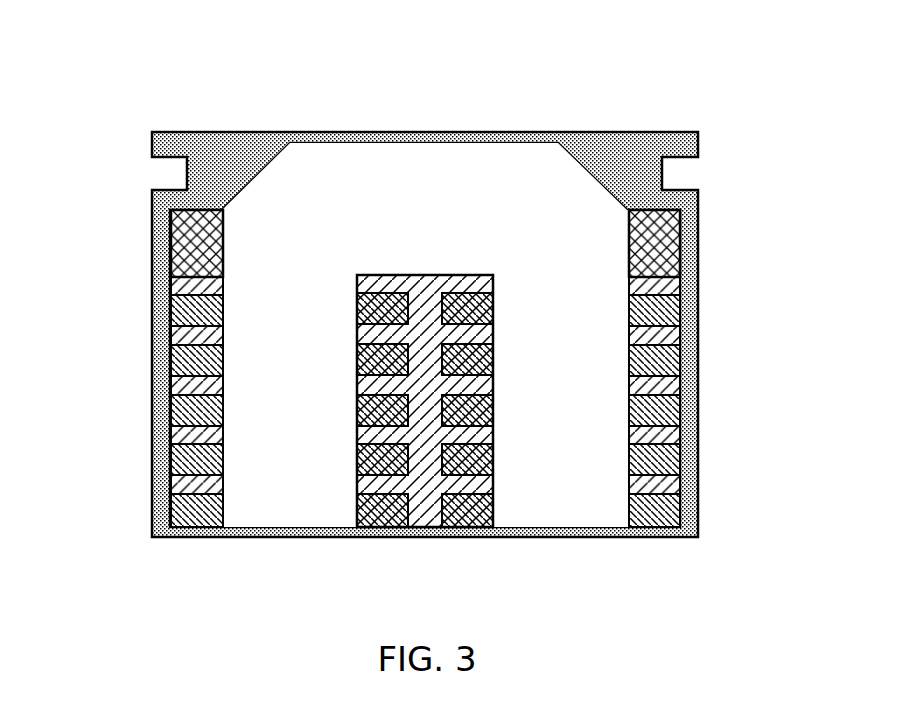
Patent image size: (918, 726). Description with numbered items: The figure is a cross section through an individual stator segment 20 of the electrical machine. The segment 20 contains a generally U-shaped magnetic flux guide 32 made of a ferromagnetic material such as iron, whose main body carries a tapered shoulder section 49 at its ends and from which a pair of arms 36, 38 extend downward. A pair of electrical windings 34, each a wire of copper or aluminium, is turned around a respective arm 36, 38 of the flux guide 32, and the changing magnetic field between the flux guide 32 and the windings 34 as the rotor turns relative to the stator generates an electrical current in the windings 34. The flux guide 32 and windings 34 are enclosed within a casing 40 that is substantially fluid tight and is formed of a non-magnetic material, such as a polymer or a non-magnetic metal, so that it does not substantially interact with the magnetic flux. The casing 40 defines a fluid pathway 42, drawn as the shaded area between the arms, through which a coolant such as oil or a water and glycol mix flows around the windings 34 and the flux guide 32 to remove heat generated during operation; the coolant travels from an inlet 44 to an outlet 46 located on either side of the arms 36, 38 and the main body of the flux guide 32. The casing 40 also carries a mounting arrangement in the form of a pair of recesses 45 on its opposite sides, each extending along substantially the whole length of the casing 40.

The stator segment 20 is at (415, 302).
The magnetic flux guide 32 is at (610, 313).
The electrical windings 34 is at (185, 360).
The arm 36 is at (295, 498).
The arm 38 is at (592, 512).
The casing 40 is at (418, 332).
The fluid pathway 42 is at (432, 310).
The inlet 44 is at (190, 243).
The recess 45 is at (150, 158).
The outlet 46 is at (660, 242).
The tapered shoulder section 49 is at (240, 132).